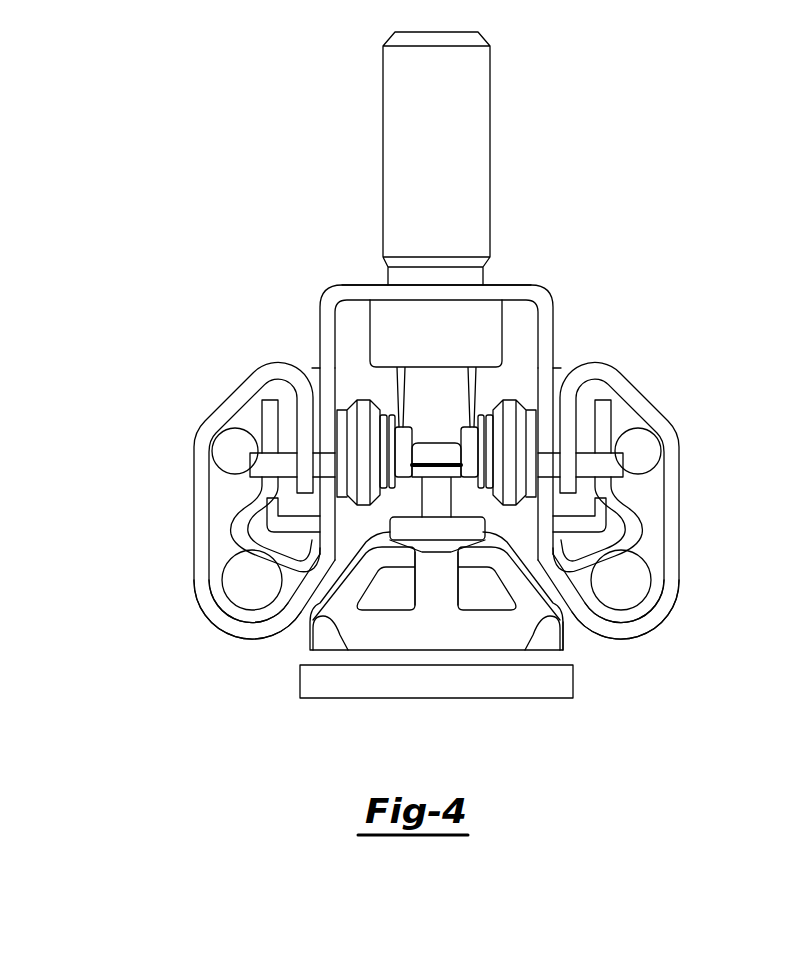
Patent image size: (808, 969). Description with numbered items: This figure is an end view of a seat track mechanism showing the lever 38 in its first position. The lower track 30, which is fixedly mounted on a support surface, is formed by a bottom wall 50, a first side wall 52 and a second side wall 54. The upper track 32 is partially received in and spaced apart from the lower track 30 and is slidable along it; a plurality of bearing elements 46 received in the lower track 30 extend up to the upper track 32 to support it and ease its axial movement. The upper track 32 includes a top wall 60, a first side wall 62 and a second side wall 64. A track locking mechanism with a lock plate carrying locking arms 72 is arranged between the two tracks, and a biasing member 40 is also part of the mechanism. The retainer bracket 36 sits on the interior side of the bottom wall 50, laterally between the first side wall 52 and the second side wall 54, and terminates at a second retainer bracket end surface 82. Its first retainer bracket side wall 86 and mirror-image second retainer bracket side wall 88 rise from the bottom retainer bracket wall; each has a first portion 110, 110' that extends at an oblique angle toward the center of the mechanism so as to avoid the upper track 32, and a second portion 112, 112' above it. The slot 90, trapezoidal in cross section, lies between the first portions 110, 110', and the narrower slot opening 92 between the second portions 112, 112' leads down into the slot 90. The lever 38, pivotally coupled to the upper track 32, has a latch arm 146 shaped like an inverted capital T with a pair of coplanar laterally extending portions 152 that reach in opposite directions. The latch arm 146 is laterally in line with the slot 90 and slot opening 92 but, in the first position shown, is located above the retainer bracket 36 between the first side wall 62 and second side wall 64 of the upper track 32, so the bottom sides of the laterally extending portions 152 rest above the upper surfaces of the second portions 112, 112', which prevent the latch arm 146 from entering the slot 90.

The lower track 30 is at (478, 699).
The upper track 32 is at (518, 283).
The retainer bracket 36 is at (556, 630).
The lever 38 is at (508, 408).
The biasing member 40 is at (455, 388).
The bearing elements 46 is at (248, 573).
The bottom wall 50 is at (345, 587).
The first side wall 52 is at (194, 498).
The second side wall 54 is at (679, 498).
The top wall 60 is at (368, 283).
The first side wall 62 is at (320, 318).
The second side wall 64 is at (553, 318).
The locking arms 72 is at (253, 452).
The second retainer bracket end surface 82 is at (524, 636).
The first retainer bracket side wall 86 is at (202, 648).
The second retainer bracket side wall 88 is at (675, 644).
The slot 90 is at (453, 612).
The slot opening 92 is at (433, 592).
The first portion 110 is at (248, 601).
The first portion 110' is at (624, 601).
The second portion 112 is at (341, 662).
The second portion 112' is at (515, 662).
The latch arm 146 is at (436, 493).
The laterally extending portions 152 is at (300, 617).